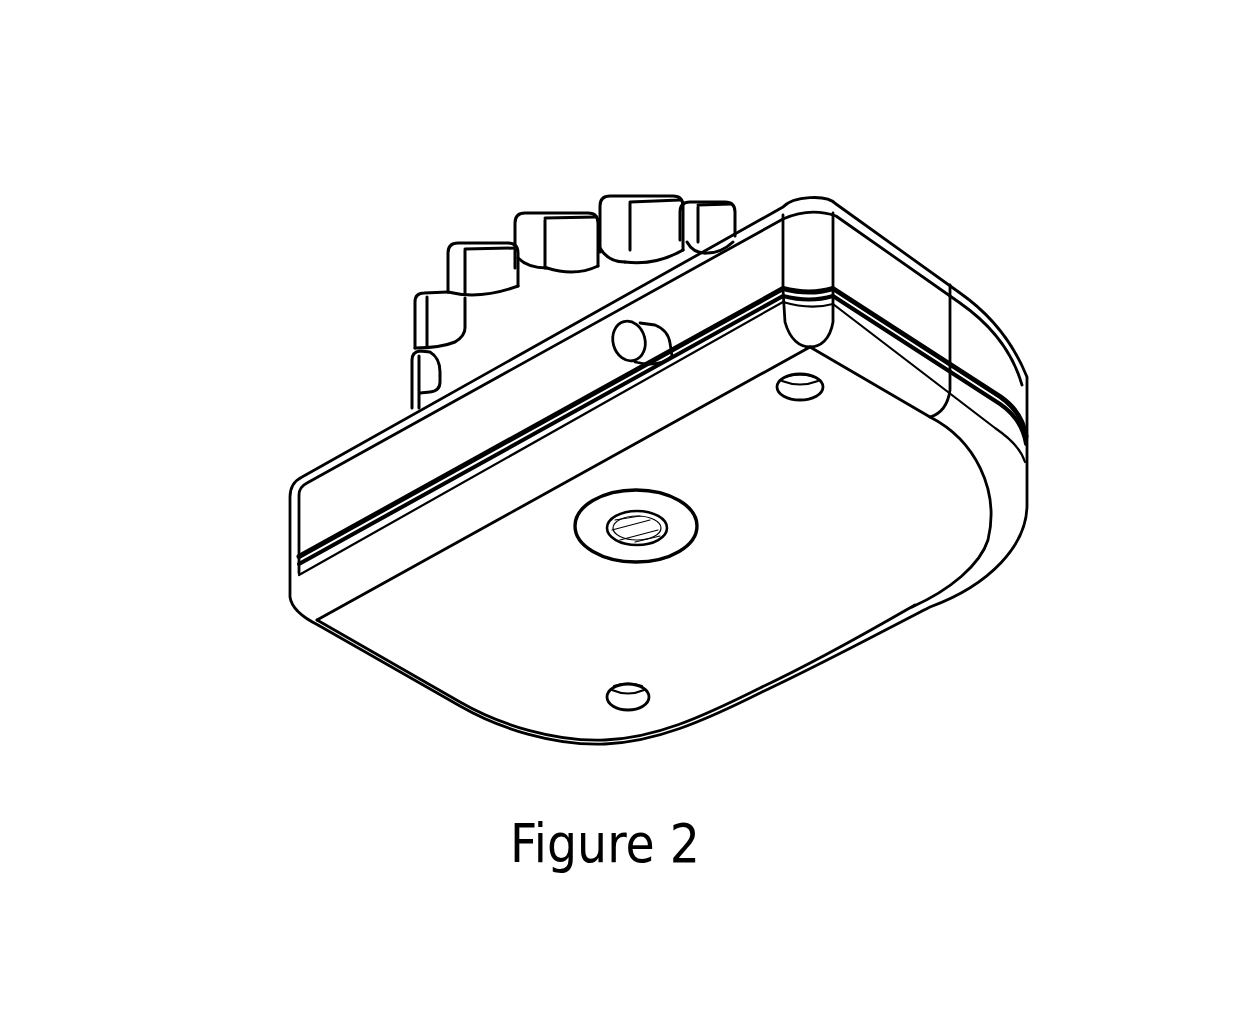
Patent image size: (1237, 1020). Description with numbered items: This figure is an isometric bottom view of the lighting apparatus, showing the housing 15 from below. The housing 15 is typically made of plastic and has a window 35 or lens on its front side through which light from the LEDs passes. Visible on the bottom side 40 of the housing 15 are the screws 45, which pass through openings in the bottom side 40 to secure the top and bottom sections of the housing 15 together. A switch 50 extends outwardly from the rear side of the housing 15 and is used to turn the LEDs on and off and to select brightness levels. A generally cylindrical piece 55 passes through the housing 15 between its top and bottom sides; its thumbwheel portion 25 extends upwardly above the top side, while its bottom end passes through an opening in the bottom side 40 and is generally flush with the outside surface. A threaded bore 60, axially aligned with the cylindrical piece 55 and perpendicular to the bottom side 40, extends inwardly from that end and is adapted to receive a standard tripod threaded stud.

The housing 15 is at (785, 738).
The thumbwheel portion 25 is at (500, 330).
The window 35 is at (872, 657).
The bottom side 40 is at (884, 495).
The screws 45 is at (805, 378).
The switch 50 is at (625, 338).
The cylindrical piece 55 is at (605, 542).
The threaded bore 60 is at (637, 530).